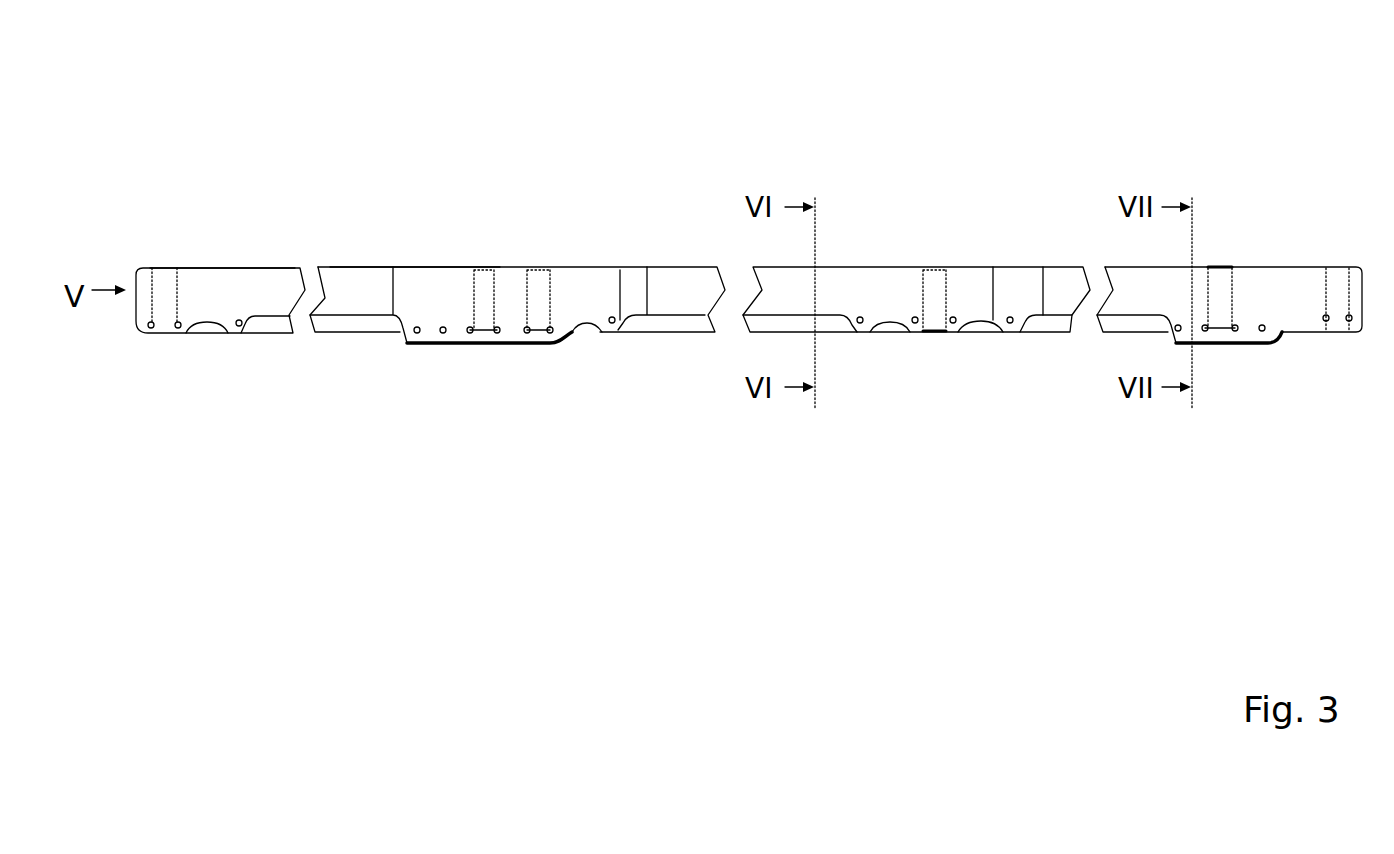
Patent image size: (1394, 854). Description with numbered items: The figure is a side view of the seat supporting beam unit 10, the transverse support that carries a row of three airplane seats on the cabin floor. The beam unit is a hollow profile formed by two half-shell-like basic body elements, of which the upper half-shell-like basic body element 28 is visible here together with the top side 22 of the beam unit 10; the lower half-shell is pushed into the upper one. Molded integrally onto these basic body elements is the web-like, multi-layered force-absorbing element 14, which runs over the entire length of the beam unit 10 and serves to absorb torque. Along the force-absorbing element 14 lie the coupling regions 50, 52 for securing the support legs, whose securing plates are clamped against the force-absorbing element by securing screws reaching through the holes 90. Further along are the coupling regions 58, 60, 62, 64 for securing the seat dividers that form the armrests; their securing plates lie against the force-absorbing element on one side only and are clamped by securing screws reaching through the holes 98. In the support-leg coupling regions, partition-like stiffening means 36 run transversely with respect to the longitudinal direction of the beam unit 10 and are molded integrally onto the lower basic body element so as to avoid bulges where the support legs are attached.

The seat supporting beam unit 10 is at (587, 248).
The force-absorbing element 14 is at (149, 350).
The top side 22 is at (240, 248).
The upper half-shell-like basic body element 28 is at (421, 259).
The stiffening means 36 is at (168, 278).
The coupling region 50 is at (455, 325).
The coupling region 52 is at (1247, 330).
The coupling region 58 is at (222, 323).
The coupling region 60 is at (600, 327).
The coupling region 62 is at (920, 334).
The coupling region 64 is at (1335, 312).
The hole 90 is at (522, 325).
The hole 98 is at (239, 327).